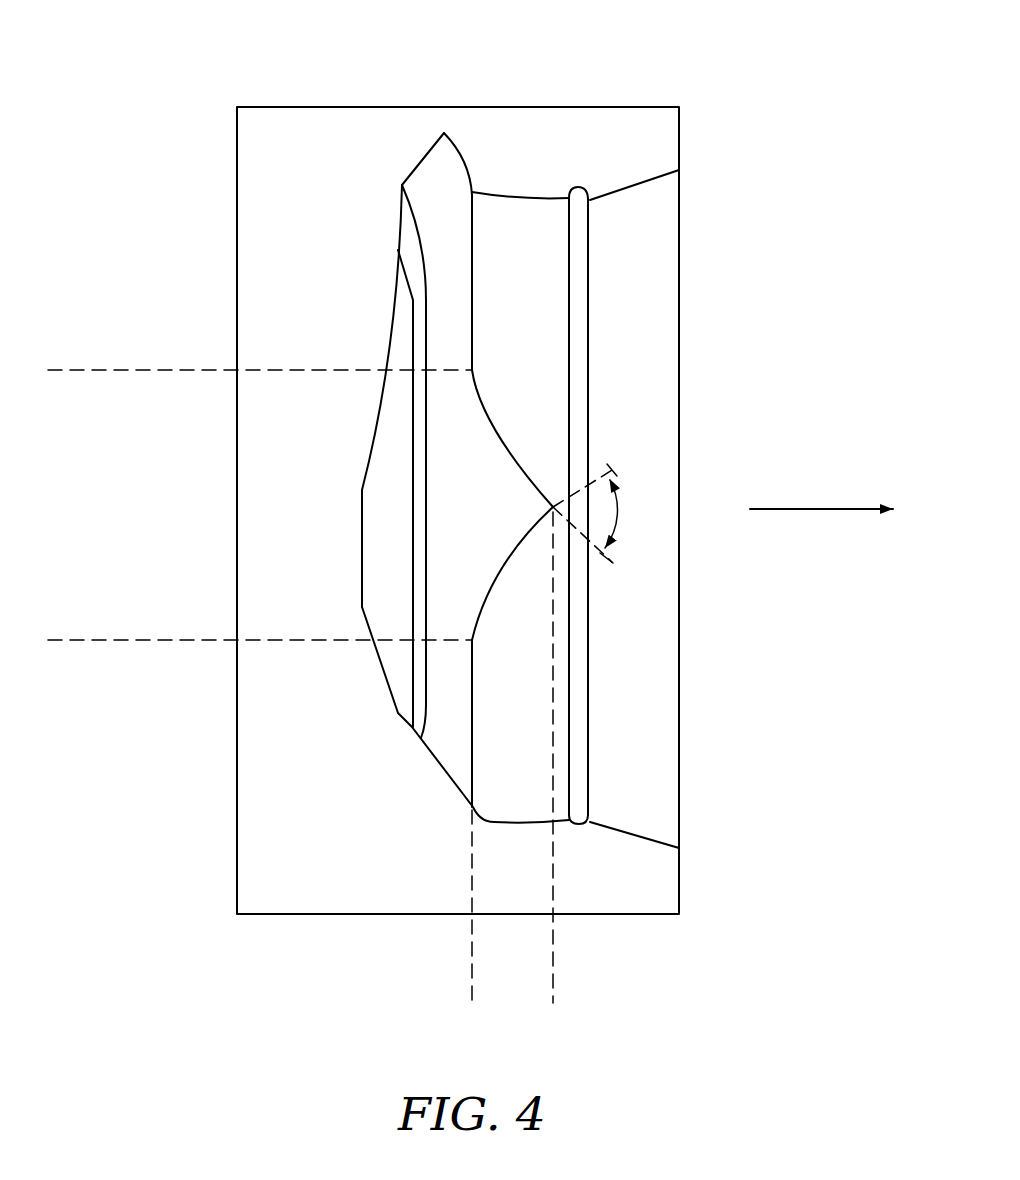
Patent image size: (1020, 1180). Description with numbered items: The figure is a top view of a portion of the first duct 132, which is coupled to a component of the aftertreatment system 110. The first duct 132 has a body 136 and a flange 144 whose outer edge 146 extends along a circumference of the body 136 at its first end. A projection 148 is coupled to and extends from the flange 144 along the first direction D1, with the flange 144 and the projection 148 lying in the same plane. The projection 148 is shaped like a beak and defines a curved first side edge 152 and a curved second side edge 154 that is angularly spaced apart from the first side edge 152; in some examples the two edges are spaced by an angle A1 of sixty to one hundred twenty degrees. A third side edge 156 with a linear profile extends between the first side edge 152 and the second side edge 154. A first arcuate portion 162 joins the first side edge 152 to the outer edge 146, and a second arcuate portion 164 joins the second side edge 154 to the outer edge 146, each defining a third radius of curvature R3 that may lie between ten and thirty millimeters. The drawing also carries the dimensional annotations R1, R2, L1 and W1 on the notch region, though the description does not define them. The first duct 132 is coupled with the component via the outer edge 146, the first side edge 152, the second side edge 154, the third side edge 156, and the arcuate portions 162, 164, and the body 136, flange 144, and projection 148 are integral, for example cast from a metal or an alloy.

The aftertreatment system 110 is at (303, 136).
The first duct 132 is at (317, 220).
The body 136 is at (397, 667).
The flange 144 is at (427, 180).
The outer edge 146 is at (472, 280).
The projection 148 is at (547, 515).
The first side edge 152 is at (530, 472).
The second side edge 154 is at (518, 546).
The third side edge 156 is at (553, 505).
The first arcuate portion 162 is at (474, 372).
The second arcuate portion 164 is at (475, 630).
The first radius R1 is at (511, 441).
The second radius R2 is at (510, 569).
The third radius of curvature R3 is at (476, 369).
The angle A1 is at (619, 518).
The notch length L1 is at (55, 372).
The notch width W1 is at (551, 997).
The first direction D1 is at (821, 492).